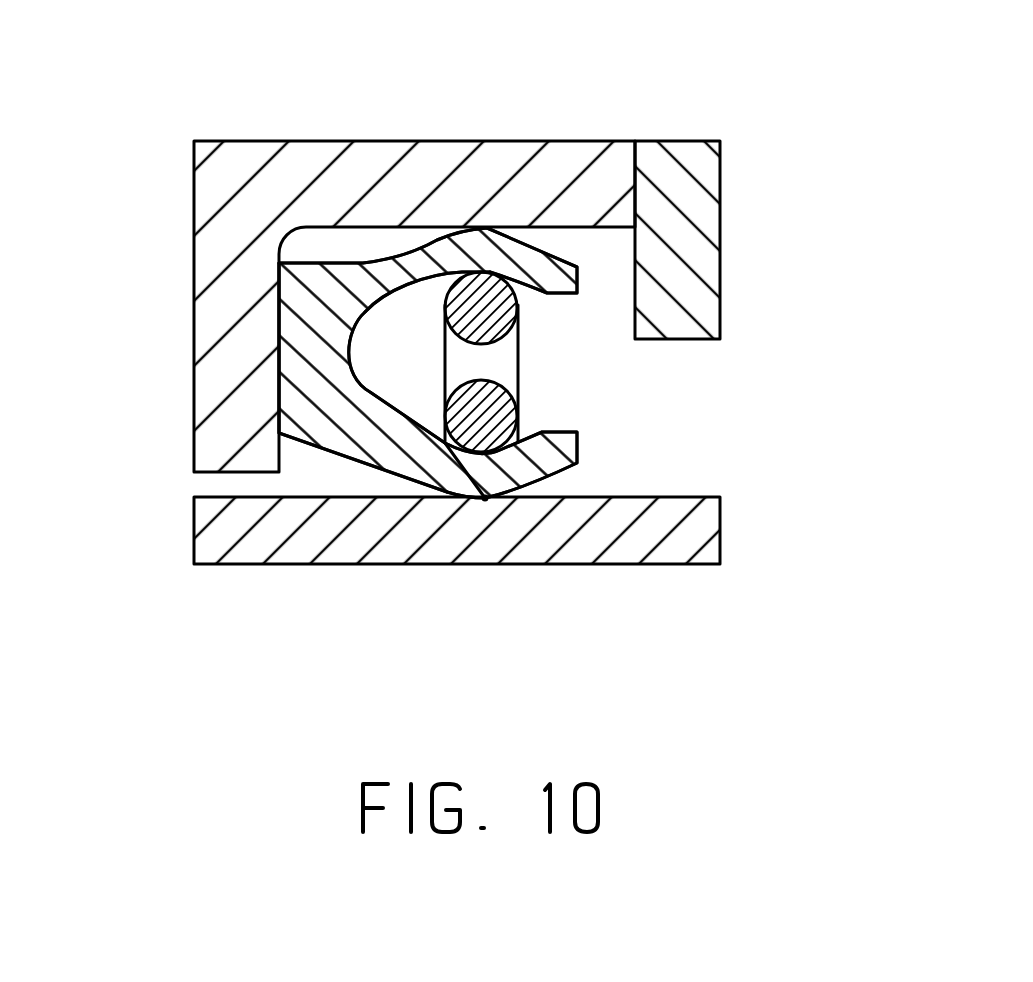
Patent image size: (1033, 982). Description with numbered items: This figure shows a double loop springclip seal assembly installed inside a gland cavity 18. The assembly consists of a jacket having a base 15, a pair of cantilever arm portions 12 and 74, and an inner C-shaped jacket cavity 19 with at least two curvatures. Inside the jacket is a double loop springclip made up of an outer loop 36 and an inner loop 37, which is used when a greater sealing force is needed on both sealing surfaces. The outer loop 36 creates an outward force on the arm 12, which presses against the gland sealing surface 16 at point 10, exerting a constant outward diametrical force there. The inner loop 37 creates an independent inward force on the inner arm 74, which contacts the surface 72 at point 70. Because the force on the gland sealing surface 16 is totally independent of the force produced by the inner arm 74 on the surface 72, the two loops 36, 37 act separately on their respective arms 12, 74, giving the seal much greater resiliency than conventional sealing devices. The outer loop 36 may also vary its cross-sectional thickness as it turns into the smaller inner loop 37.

The sealing point on gland sealing surface 10 is at (567, 37).
The cantilever arm portion 12 is at (690, 62).
The base 15 is at (307, 337).
The gland sealing surface 16 is at (380, 229).
The gland cavity 18 is at (832, 367).
The jacket cavity 19 is at (378, 355).
The outer loop 36 is at (807, 282).
The inner loop 37 is at (797, 458).
The contact point on surface 70 is at (487, 638).
The surface 72 is at (345, 638).
The inner cantilever arm portion 74 is at (652, 608).